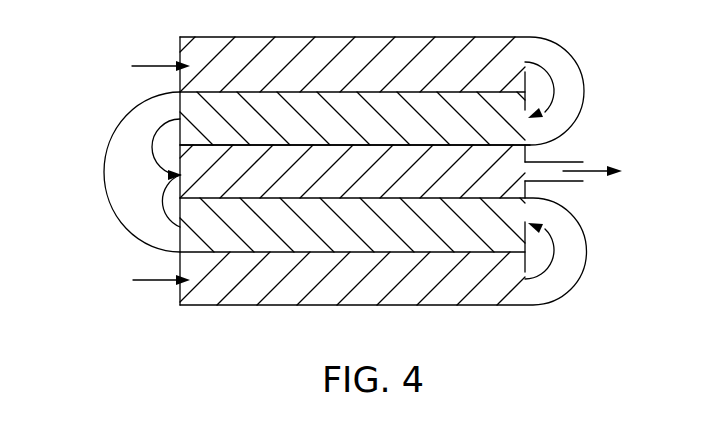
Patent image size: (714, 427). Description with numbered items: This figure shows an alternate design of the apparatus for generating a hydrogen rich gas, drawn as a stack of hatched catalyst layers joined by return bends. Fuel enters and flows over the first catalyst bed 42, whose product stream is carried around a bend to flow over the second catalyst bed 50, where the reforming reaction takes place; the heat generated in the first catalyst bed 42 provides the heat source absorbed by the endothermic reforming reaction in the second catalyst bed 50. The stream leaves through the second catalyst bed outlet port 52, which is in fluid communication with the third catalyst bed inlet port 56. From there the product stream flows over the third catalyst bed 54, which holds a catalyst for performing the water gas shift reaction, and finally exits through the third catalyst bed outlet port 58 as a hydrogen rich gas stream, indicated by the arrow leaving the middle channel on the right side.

The first catalyst bed 42 is at (318, 45).
The second catalyst bed 50 is at (482, 110).
The second catalyst bed outlet port 52 is at (178, 119).
The third catalyst bed 54 is at (508, 188).
The third catalyst bed inlet port 56 is at (168, 175).
The third catalyst bed outlet port 58 is at (594, 177).